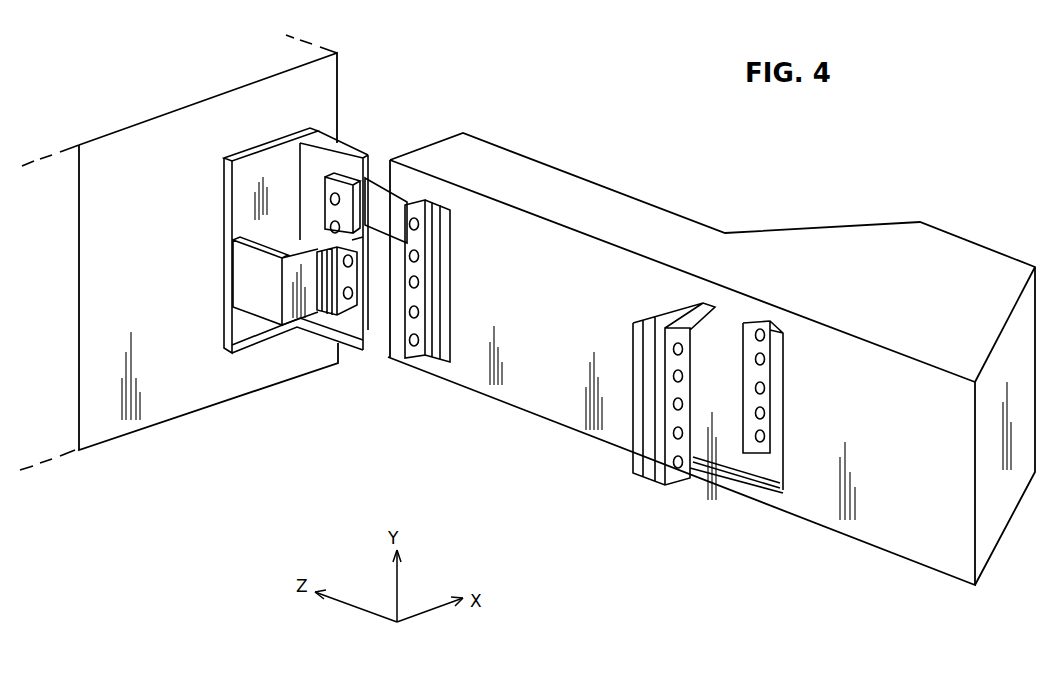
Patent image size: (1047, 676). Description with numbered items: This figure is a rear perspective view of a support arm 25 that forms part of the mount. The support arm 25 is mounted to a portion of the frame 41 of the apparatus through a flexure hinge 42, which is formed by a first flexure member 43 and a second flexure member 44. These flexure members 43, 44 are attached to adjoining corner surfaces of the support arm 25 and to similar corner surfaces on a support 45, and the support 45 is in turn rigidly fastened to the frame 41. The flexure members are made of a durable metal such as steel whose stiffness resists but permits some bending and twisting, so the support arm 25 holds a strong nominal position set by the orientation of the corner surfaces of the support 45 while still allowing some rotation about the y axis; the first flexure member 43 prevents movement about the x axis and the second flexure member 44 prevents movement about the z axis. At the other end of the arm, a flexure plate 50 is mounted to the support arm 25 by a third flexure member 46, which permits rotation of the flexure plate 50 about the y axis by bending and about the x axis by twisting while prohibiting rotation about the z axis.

The support arm 25 is at (613, 217).
The frame 41 is at (175, 153).
The flexure hinge 42 is at (383, 153).
The first flexure member 43 is at (398, 200).
The second flexure member 44 is at (322, 295).
The support 45 is at (230, 295).
The third flexure member 46 is at (702, 420).
The flexure plate 50 is at (757, 470).